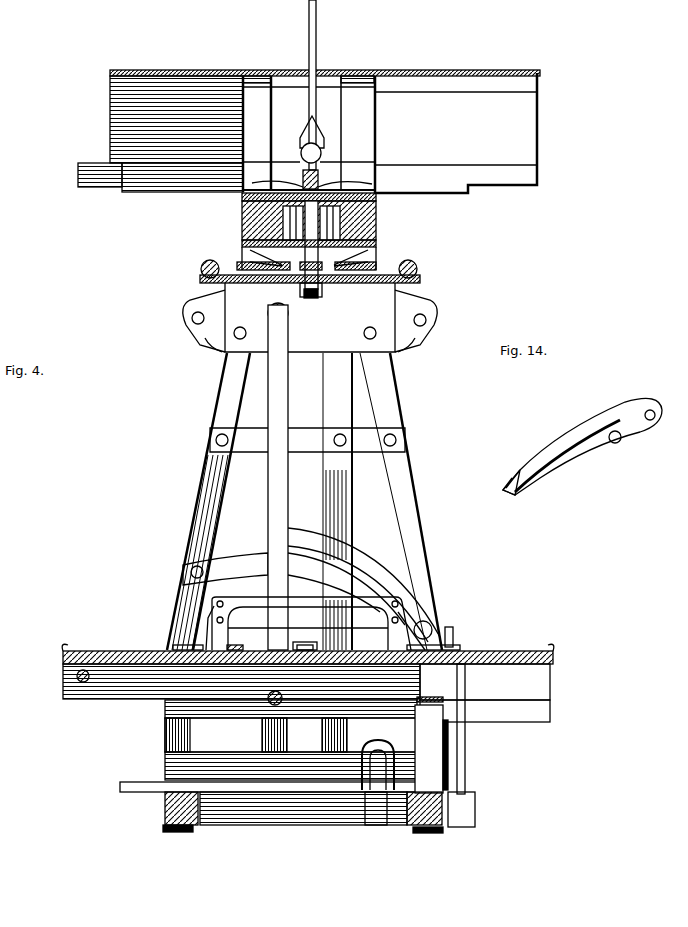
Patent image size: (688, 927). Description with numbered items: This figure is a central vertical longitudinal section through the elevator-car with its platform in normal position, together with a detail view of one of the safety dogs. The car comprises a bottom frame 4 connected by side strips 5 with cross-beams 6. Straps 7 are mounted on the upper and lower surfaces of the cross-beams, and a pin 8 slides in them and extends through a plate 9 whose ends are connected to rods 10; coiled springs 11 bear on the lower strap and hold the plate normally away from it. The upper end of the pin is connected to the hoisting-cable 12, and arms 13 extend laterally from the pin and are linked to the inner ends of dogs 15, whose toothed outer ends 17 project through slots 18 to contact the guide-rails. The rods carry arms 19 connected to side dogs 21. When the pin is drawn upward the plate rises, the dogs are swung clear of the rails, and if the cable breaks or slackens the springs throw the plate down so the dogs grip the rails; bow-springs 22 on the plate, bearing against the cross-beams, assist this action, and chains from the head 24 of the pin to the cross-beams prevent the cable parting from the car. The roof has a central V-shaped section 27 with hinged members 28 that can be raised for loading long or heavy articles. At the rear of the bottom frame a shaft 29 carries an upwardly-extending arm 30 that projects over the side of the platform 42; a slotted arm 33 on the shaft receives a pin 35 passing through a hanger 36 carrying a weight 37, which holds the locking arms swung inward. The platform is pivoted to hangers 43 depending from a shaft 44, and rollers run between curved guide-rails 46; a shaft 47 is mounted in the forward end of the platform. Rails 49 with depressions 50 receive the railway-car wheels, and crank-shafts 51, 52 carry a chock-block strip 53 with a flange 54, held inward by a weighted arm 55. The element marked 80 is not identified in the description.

In FIG. 4, the bottom frame 4 is at (190, 822).
In FIG. 4, the side strips 5 is at (195, 492).
In FIG. 4, the cross-beams 6 is at (376, 232).
In FIG. 4, the straps 7 is at (335, 193).
In FIG. 4, the pin 8 is at (376, 205).
In FIG. 4, the plate 9 is at (310, 317).
In FIG. 4, the rods 10 is at (200, 270).
In FIG. 4, the coiled springs 11 is at (376, 258).
In FIG. 4, the hoisting-cable 12 is at (318, 30).
In FIG. 4, the arms 13 is at (300, 174).
In FIG. 14, the dogs 15 is at (568, 460).
In FIG. 14, the toothed outer ends 17 is at (510, 490).
In FIG. 4, the slots 18 is at (300, 294).
In FIG. 4, the arms 19 is at (188, 296).
In FIG. 4, the dogs 21 is at (210, 345).
In FIG. 4, the bow-springs 22 is at (245, 262).
In FIG. 4, the head 24 is at (320, 150).
In FIG. 4, the central V-shaped section 27 is at (325, 117).
In FIG. 4, the members 28 is at (474, 133).
In FIG. 4, the shaft 29 is at (445, 805).
In FIG. 4, the arm 30 is at (448, 745).
In FIG. 4, the slotted arm 33 is at (362, 792).
In FIG. 4, the pin 35 is at (340, 795).
In FIG. 4, the hanger 36 is at (290, 768).
In FIG. 4, the weight 37 is at (378, 826).
In FIG. 4, the platform 42 is at (140, 699).
In FIG. 4, the hangers 43 is at (268, 508).
In FIG. 4, the shaft 44 is at (286, 320).
In FIG. 4, the curved guide-rails 46 is at (183, 572).
In FIG. 4, the shaft 47 is at (82, 684).
In FIG. 4, the rails 49 is at (500, 648).
In FIG. 4, the depressions 50 is at (340, 630).
In FIG. 4, the crank-shaft 51 is at (206, 636).
In FIG. 4, the crank-shaft 52 is at (432, 620).
In FIG. 4, the strip 53 is at (311, 623).
In FIG. 4, the flange 54 is at (352, 568).
In FIG. 4, the weighted arm 55 is at (466, 778).
In FIG. 4, the block 80 is at (85, 163).